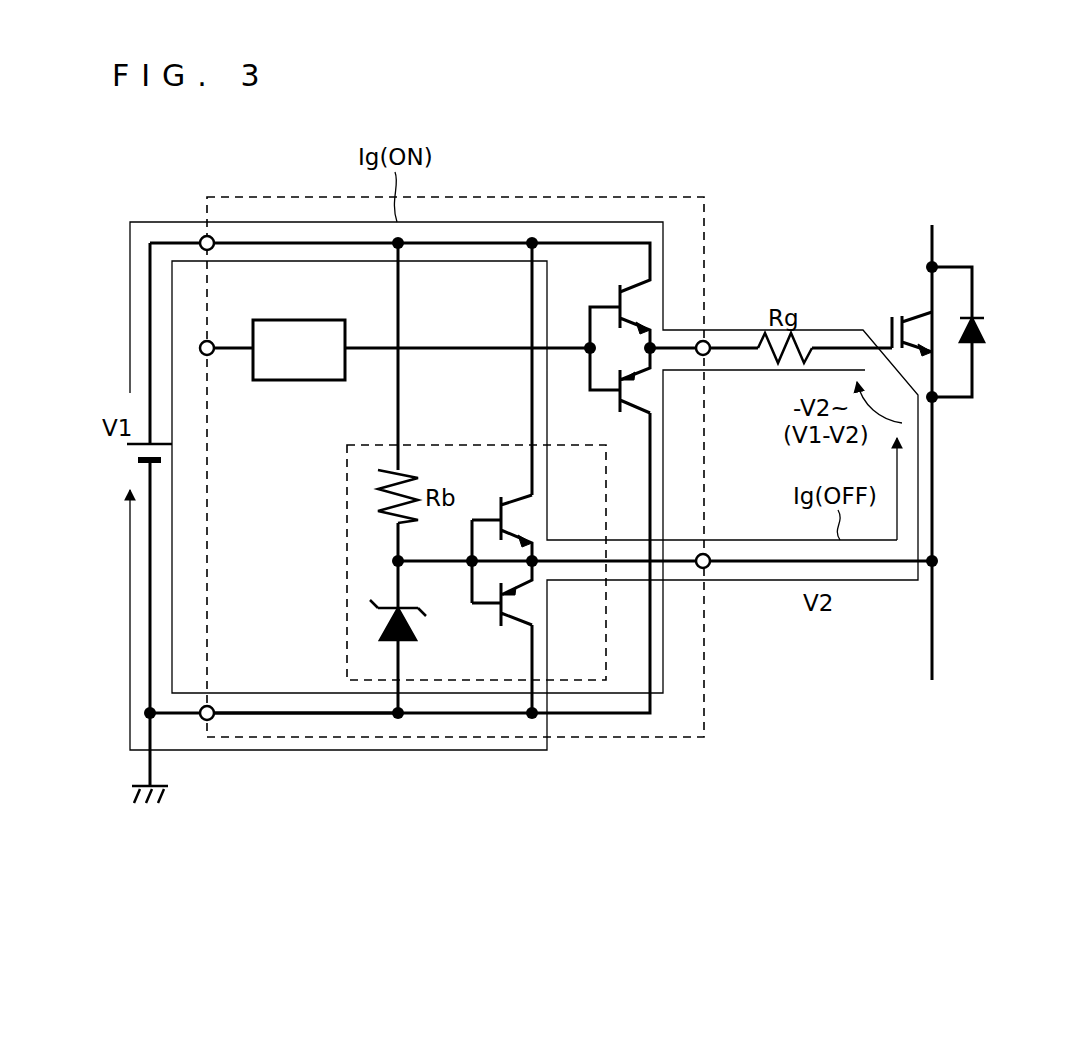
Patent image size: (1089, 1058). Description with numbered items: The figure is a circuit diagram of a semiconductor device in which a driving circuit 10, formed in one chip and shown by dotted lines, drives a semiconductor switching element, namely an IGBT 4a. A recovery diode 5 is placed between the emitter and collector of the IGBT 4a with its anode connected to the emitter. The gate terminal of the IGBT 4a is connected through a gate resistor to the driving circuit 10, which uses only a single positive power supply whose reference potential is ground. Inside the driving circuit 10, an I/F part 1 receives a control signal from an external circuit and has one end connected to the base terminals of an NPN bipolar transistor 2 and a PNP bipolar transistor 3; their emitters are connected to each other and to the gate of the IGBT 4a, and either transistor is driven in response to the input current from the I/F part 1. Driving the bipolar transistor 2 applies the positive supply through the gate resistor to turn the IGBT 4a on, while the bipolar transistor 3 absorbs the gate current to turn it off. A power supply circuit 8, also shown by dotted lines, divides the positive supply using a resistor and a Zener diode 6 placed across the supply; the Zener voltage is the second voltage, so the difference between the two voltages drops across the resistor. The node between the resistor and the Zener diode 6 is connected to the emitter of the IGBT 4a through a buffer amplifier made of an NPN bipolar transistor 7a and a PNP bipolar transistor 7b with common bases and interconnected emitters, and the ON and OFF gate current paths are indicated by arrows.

The I/F part 1 is at (299, 385).
The bipolar transistor 2 is at (650, 300).
The bipolar transistor 3 is at (650, 387).
The IGBT 4a is at (897, 312).
The recovery diode 5 is at (985, 330).
The Zener diode 6 is at (372, 626).
The NPN transistor of bias circuit 7a is at (520, 513).
The PNP transistor of bias circuit 7b is at (520, 600).
The power supply circuit 8 is at (483, 440).
The driving circuit 10 is at (450, 738).